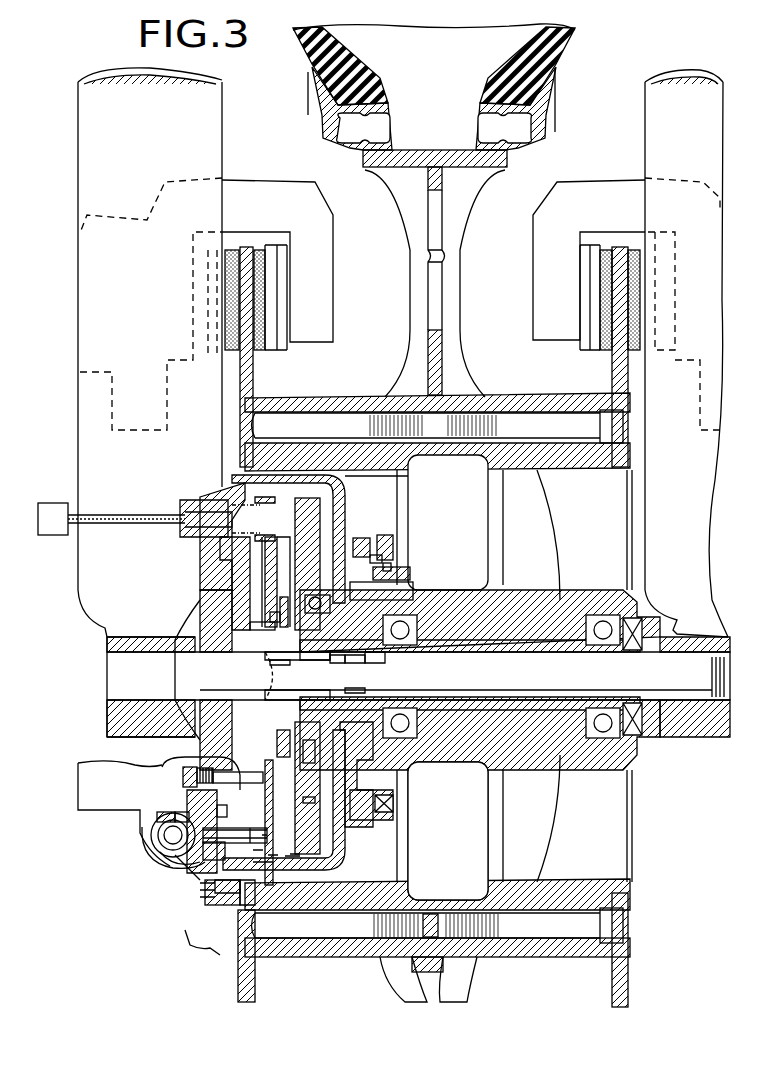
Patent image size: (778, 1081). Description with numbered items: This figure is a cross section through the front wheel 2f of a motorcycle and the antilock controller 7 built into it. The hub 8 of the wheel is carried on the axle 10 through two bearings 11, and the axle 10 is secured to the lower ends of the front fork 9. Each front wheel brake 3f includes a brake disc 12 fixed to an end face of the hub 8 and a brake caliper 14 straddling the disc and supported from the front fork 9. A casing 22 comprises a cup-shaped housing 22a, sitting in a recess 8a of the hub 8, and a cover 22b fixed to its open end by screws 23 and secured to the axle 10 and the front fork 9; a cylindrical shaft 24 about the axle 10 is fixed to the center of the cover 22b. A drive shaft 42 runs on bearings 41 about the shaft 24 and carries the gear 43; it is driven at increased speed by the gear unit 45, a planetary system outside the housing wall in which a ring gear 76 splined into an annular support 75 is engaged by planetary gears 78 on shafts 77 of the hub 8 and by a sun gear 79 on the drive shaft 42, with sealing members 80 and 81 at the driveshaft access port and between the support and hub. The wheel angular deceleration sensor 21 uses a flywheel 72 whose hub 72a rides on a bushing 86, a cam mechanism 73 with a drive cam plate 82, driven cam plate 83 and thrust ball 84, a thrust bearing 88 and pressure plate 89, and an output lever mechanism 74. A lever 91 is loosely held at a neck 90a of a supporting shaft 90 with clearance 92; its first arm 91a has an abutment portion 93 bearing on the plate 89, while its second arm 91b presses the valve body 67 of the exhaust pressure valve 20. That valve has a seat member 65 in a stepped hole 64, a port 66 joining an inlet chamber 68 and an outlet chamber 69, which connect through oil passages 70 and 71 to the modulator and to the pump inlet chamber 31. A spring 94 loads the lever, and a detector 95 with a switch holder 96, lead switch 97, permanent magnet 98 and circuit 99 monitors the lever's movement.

The front wheel 2f is at (565, 78).
The front wheel brake 3f is at (238, 178).
The antilock controller 7 is at (209, 476).
The hub 8 is at (330, 397).
The recess 8a is at (368, 476).
The front fork 9 is at (222, 103).
The axle 10 is at (494, 676).
The bearings 11 is at (603, 645).
The brake disc 12 is at (244, 262).
The brake caliper 14 is at (326, 211).
The exhaust pressure valve 20 is at (185, 865).
The wheel angular deceleration sensor 21 is at (337, 500).
The casing 22 is at (202, 952).
The cup-shaped housing 22a is at (248, 905).
The cover 22b is at (220, 900).
The screws 23 is at (210, 895).
The cylindrical shaft 24 is at (352, 660).
The inlet chamber 31 is at (160, 765).
The bearings 41 is at (358, 665).
The drive shaft 42 is at (338, 656).
The gear 43 is at (215, 602).
The gear unit 45 is at (362, 538).
The stepped cylindrical hole 64 is at (152, 866).
The valve seat member 65 is at (172, 862).
The valve port 66 is at (182, 813).
The valve body 67 is at (267, 835).
The inlet chamber 68 is at (167, 814).
The outlet chamber 69 is at (205, 866).
The oil passage 70 is at (157, 834).
The oil passage 71 is at (227, 808).
The flywheel 72 is at (297, 550).
The hub 72a is at (308, 660).
The cam mechanism 73 is at (317, 596).
The output lever mechanism 74 is at (270, 790).
The annular support 75 is at (385, 535).
The ring gear 76 is at (382, 559).
The shafts 77 is at (395, 583).
The planetary gears 78 is at (392, 567).
The sun gear 79 is at (360, 735).
The sealing member 80 is at (372, 653).
The sealing member 81 is at (394, 805).
The drive cam plate 82 is at (312, 765).
The driven cam plate 83 is at (312, 800).
The thrust ball 84 is at (300, 598).
The bushing 86 is at (290, 653).
The thrust bearing 88 is at (272, 624).
The pressure plate 89 is at (278, 610).
The supporting shaft 90 is at (200, 757).
The neck 90a is at (223, 777).
The lever 91 is at (261, 565).
The first arm 91a is at (267, 578).
The second arm 91b is at (277, 835).
The clearance 92 is at (274, 760).
The abutment portion 93 is at (274, 676).
The spring 94 is at (222, 550).
The detector 95 is at (185, 523).
The switch holder 96 is at (200, 530).
The lead switch 97 is at (265, 545).
The permanent magnet 98 is at (263, 515).
The circuit 99 is at (63, 529).